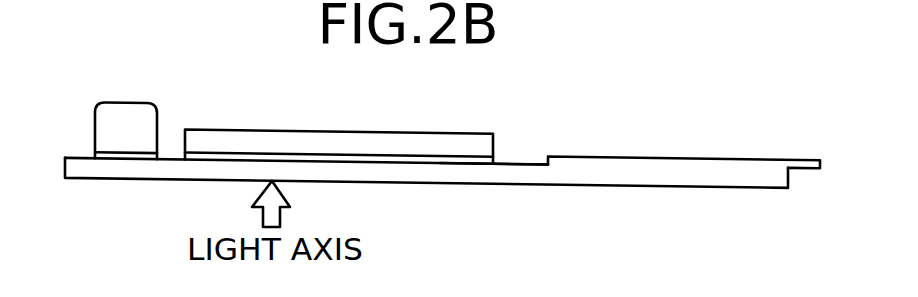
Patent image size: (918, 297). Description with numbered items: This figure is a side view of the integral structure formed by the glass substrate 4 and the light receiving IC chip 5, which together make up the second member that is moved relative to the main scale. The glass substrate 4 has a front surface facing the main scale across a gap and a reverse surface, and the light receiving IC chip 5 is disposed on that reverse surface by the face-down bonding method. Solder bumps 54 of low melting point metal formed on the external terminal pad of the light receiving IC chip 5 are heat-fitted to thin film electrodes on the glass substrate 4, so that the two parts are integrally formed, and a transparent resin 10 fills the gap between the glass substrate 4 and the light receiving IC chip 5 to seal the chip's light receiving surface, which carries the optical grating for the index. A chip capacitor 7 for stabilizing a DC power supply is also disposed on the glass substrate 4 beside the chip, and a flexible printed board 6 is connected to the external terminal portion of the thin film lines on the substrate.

The glass substrate 4 is at (547, 172).
The transparent resin 10 is at (402, 162).
The solder bumps 54 is at (464, 162).
The chip capacitor 7 is at (125, 122).
The light receiving IC chip 5 is at (452, 132).
The flexible printed board 6 is at (751, 158).